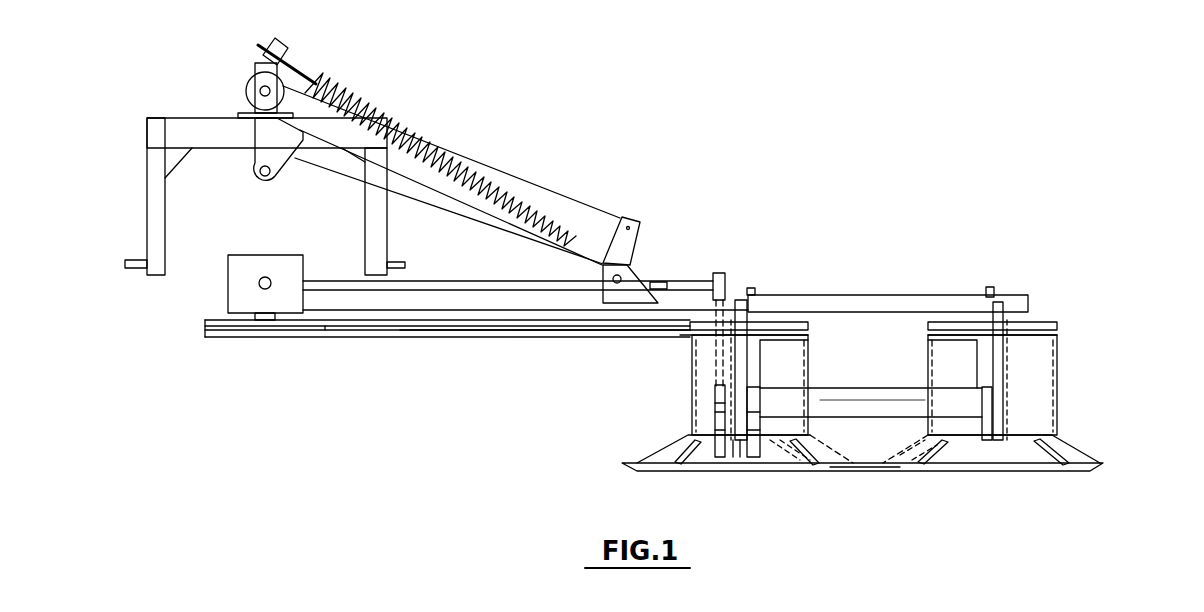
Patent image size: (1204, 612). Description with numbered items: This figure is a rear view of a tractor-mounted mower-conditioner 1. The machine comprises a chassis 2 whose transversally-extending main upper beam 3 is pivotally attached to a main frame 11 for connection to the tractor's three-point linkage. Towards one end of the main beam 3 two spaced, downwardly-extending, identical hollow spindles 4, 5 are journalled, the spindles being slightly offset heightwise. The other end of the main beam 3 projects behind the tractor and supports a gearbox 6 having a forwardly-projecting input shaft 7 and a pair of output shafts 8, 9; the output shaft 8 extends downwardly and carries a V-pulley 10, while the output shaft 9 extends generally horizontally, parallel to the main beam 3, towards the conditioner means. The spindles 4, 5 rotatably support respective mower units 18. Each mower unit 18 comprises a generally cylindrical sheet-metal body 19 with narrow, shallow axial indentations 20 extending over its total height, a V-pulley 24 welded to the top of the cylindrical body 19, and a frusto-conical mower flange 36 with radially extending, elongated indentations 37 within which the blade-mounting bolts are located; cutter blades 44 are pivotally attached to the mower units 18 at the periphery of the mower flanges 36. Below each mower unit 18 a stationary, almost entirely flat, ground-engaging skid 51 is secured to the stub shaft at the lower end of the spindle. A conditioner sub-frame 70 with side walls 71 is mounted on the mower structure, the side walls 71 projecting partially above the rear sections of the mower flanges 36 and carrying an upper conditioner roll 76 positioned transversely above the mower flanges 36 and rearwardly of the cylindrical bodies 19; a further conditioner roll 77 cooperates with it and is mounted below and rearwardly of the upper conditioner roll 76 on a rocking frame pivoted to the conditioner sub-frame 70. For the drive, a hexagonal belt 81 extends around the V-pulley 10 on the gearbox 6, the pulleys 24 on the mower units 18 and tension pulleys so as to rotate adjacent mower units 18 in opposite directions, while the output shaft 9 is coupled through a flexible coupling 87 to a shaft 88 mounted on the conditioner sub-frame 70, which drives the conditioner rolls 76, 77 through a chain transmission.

The mower-conditioner 1 is at (1028, 242).
The chassis 2 is at (1030, 308).
The main upper beam 3 is at (548, 312).
The hollow spindle 4 is at (752, 291).
The hollow spindle 5 is at (990, 287).
The gearbox 6 is at (228, 282).
The input shaft 7 is at (267, 278).
The output shaft 8 is at (250, 317).
The output shaft 9 is at (331, 279).
The V-pulley 10 is at (320, 338).
The main frame 11 is at (168, 117).
The mower unit 18 is at (688, 402).
The cylindrical body 19 is at (762, 367).
The indentations 20 is at (692, 365).
The V-pulley 24 is at (790, 321).
The mower flange 36 is at (660, 452).
The indentations 37 is at (703, 457).
The cutter blades 44 is at (633, 465).
The ground-engaging skid 51 is at (793, 442).
The conditioner sub-frame 70 is at (1012, 381).
The side walls 71 is at (758, 307).
The upper conditioner roll 76 is at (872, 390).
The conditioner roll 77 is at (867, 470).
The hexagonal belt 81 is at (470, 338).
The flexible coupling 87 is at (663, 281).
The shaft 88 is at (696, 288).